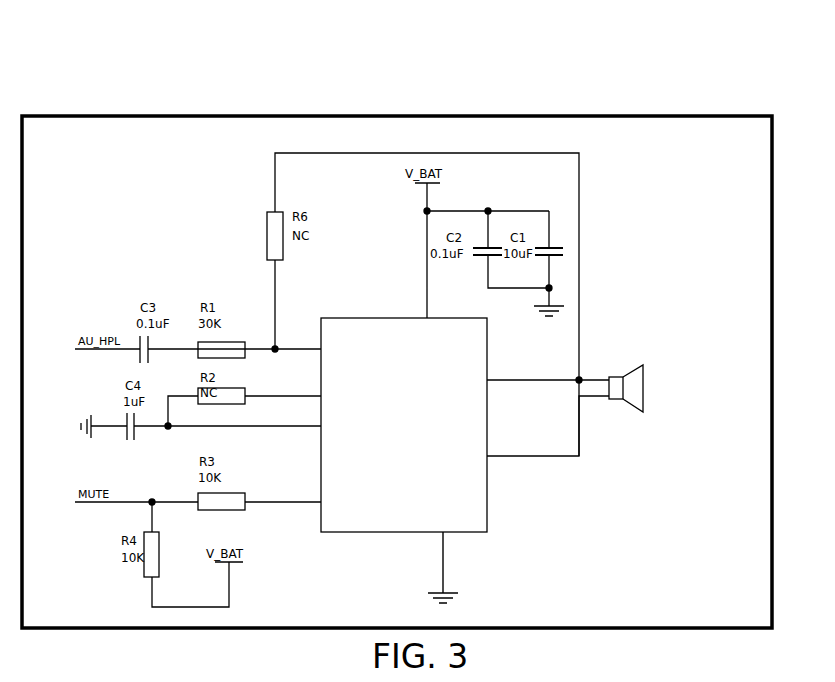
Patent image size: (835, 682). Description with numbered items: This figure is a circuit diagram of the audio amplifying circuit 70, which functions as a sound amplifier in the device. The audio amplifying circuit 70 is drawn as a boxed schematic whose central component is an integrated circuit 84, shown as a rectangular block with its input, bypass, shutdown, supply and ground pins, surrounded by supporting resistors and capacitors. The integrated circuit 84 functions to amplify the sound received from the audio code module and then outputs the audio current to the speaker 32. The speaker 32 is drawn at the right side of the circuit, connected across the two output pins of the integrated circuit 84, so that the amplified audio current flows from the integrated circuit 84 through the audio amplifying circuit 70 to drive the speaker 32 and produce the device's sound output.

The audio amplifying circuit 70 is at (590, 120).
The speaker 32 is at (645, 381).
The integrated circuit 84 is at (388, 532).